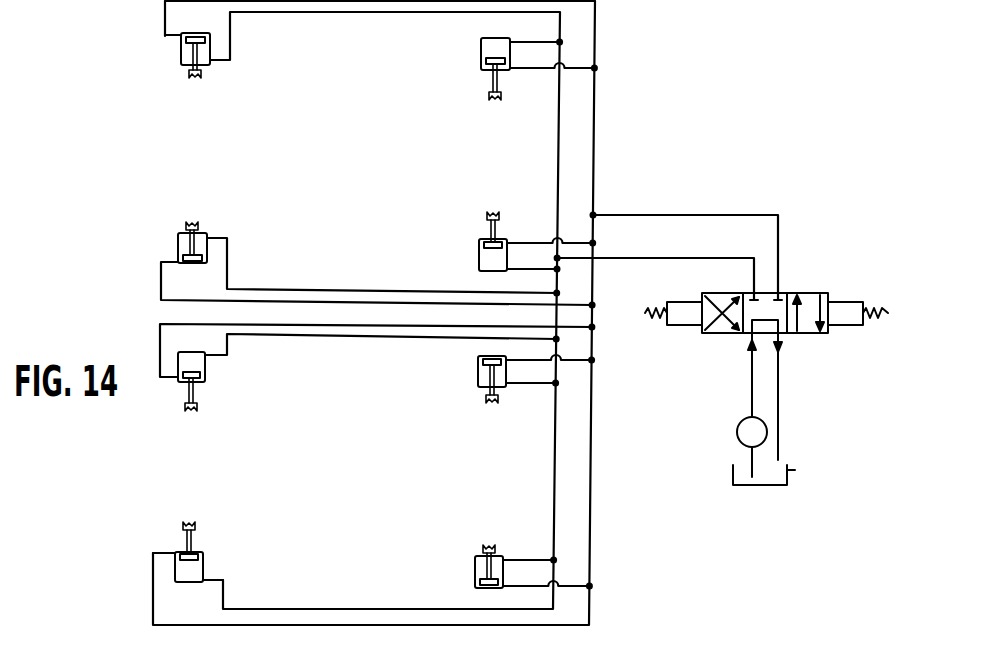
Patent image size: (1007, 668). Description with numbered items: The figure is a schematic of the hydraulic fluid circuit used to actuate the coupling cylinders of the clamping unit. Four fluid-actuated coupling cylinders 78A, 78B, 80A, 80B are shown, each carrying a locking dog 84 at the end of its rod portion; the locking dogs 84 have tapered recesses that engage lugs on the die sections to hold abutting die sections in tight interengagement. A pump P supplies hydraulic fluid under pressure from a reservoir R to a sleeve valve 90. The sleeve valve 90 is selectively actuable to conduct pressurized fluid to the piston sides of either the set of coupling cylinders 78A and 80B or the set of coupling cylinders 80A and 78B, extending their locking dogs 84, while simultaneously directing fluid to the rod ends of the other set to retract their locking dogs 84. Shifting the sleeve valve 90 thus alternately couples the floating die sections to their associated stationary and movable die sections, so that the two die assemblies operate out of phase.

The coupling cylinder 78A is at (480, 47).
The coupling cylinder 78B is at (478, 370).
The coupling cylinder 80A is at (180, 53).
The coupling cylinder 80B is at (205, 365).
The locking dog 84 is at (201, 75).
The sleeve valve 90 is at (798, 293).